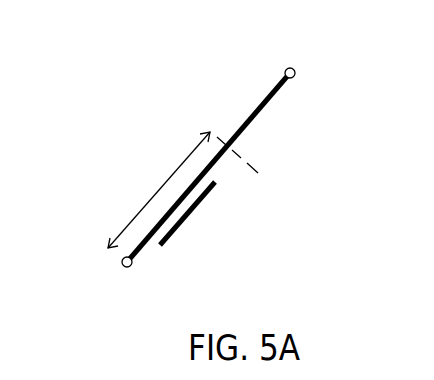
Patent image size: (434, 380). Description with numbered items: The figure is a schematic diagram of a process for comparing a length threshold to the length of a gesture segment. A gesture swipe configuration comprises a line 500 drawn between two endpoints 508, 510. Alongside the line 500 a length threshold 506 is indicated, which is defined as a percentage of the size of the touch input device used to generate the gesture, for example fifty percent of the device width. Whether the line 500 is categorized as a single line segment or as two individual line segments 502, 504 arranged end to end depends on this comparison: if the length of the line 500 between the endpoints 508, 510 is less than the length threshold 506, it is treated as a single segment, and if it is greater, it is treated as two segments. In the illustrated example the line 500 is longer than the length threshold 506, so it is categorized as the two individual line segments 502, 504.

The line 500 is at (146, 98).
The individual line segment 502 is at (260, 110).
The individual line segment 504 is at (183, 200).
The length threshold 506 is at (152, 197).
The endpoint 508 is at (122, 265).
The endpoint 510 is at (293, 78).